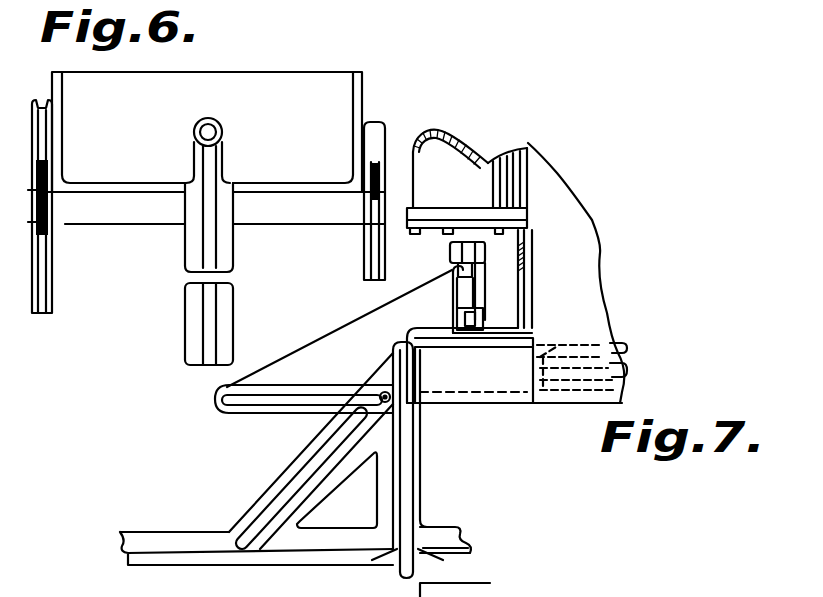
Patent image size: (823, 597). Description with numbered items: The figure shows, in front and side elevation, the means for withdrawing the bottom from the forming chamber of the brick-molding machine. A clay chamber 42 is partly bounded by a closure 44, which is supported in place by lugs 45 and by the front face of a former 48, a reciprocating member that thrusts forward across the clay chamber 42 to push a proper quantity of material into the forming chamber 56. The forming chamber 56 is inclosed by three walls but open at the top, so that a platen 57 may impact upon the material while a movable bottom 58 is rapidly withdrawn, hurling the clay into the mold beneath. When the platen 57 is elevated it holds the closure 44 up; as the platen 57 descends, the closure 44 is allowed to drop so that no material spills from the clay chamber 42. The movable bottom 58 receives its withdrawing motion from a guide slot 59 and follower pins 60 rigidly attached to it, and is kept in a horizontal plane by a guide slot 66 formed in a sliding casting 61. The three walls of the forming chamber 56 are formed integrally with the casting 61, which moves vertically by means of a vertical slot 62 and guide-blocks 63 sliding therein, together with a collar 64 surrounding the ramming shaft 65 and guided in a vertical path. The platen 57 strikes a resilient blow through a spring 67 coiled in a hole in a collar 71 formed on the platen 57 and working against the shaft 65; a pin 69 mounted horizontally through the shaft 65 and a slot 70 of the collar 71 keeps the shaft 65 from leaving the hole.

In FIG. 7, the clay chamber 42 is at (623, 355).
In FIG. 7, the closure 44 is at (488, 316).
In FIG. 7, the lugs 45 is at (532, 252).
In FIG. 7, the former 48 is at (576, 357).
In FIG. 6, the forming chamber 56 is at (302, 86).
In FIG. 7, the forming chamber 56 is at (514, 368).
In FIG. 7, the platen 57 is at (433, 333).
In FIG. 6, the movable bottom 58 is at (295, 241).
In FIG. 7, the movable bottom 58 is at (497, 393).
In FIG. 7, the guide slot 59 is at (300, 493).
In FIG. 6, the follower pins 60 is at (62, 228).
In FIG. 7, the follower pins 60 is at (378, 393).
In FIG. 6, the sliding casting 61 is at (226, 297).
In FIG. 7, the sliding casting 61 is at (372, 332).
In FIG. 7, the vertical slot 62 is at (405, 512).
In FIG. 6, the guide-blocks 63 is at (388, 182).
In FIG. 7, the guide-blocks 63 is at (397, 360).
In FIG. 7, the collar 64 is at (462, 278).
In FIG. 7, the ramming shaft 65 is at (481, 259).
In FIG. 7, the guide slot 66 is at (287, 398).
In FIG. 7, the spring 67 is at (473, 371).
In FIG. 7, the pin 69 is at (488, 297).
In FIG. 7, the slot 70 is at (490, 316).
In FIG. 7, the collar 71 is at (530, 283).